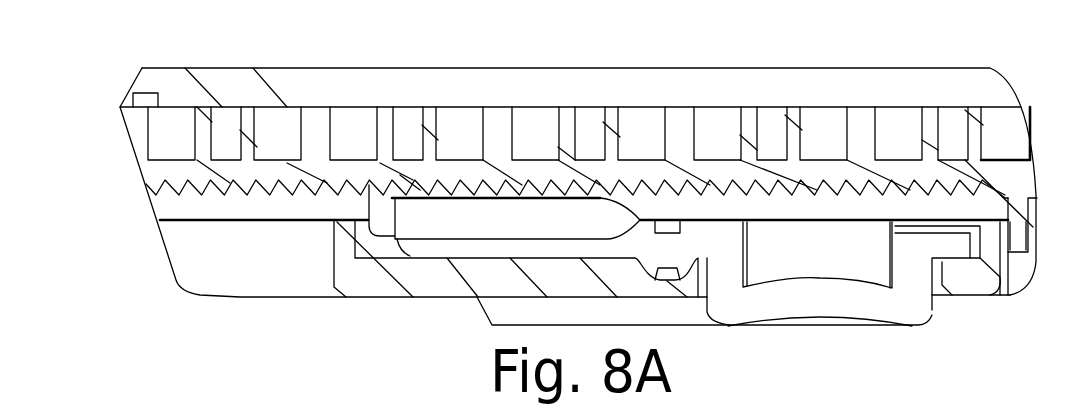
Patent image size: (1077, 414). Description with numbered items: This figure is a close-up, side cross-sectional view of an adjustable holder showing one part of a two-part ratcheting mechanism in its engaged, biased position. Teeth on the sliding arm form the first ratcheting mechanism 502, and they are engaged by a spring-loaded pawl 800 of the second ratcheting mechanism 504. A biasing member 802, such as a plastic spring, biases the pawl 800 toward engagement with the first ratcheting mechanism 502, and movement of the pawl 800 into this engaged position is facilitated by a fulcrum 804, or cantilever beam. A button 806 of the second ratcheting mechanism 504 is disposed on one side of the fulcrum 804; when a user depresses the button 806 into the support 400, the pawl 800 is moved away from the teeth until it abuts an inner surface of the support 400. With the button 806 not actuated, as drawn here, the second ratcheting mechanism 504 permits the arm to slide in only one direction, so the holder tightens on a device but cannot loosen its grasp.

The support 400 is at (550, 68).
The first ratcheting mechanism 502 is at (208, 191).
The second ratcheting mechanism 504 is at (920, 323).
The spring-loaded pawl 800 is at (518, 226).
The biasing member 802 is at (418, 247).
The fulcrum 804 is at (677, 263).
The button 806 is at (836, 308).